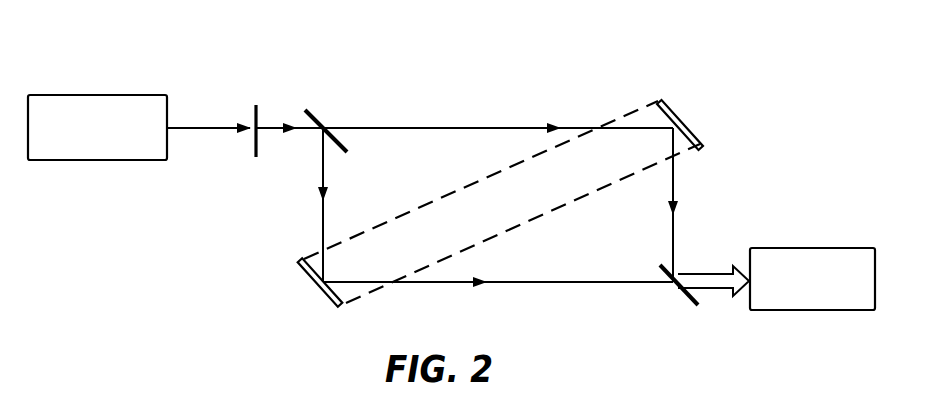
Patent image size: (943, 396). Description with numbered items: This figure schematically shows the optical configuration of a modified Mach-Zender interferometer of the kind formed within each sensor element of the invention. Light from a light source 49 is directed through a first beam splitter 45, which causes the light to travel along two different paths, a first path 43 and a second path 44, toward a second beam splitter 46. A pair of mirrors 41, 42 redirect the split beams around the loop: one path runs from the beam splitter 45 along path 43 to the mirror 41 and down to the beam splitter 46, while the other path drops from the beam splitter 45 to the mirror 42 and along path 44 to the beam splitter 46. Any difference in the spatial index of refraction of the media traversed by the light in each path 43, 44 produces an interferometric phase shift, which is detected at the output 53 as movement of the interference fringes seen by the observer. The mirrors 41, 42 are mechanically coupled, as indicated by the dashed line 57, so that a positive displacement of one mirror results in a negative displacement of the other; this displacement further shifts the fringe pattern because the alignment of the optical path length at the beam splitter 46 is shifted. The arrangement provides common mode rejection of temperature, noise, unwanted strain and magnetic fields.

The light source 49 is at (98, 95).
The beam splitter 45 is at (307, 110).
The first light path 43 is at (576, 128).
The mirror 41 is at (668, 106).
The mirror 42 is at (323, 301).
The second light path 44 is at (548, 284).
The mechanical coupling line 57 is at (449, 189).
The second beam splitter 46 is at (684, 296).
The output 53 is at (792, 248).